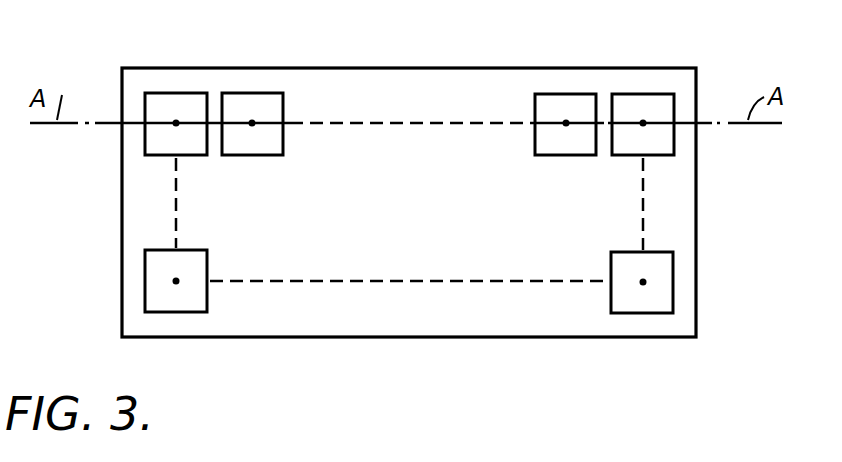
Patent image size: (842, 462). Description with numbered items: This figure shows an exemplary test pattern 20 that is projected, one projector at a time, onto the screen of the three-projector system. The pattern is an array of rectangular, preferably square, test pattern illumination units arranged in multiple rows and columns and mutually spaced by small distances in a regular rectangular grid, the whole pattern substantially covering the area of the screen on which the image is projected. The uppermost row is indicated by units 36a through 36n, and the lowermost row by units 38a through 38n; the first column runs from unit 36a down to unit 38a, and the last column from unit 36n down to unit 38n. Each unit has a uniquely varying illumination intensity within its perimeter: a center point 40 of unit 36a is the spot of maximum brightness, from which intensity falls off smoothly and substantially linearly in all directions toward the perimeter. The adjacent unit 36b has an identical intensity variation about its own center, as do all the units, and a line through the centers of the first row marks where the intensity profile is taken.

The circuit board / substrate 20 is at (468, 68).
The test pattern illumination unit 36a is at (176, 93).
The test pattern illumination unit 36b is at (263, 93).
The test pattern illumination unit 36n is at (652, 94).
The test pattern illumination unit 38a is at (188, 312).
The test pattern illumination unit 38n is at (657, 313).
The center point 40 is at (176, 123).